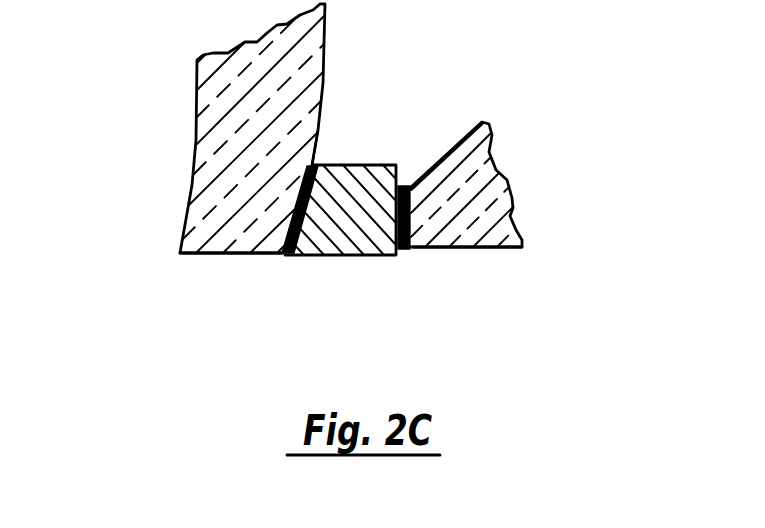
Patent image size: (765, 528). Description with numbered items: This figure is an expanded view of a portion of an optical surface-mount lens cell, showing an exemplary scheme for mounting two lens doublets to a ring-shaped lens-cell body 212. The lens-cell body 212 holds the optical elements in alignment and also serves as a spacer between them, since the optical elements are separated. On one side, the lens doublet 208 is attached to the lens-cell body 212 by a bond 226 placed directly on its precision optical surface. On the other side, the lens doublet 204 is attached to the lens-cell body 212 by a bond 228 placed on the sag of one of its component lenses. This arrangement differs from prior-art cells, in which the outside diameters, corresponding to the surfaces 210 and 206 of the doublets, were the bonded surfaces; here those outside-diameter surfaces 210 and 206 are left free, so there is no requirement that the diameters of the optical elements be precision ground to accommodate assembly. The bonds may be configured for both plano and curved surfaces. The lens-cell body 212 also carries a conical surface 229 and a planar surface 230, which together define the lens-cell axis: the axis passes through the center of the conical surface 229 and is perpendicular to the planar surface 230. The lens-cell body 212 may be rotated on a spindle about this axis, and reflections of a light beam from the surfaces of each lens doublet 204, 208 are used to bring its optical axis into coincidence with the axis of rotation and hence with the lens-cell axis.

The lens doublet 204 is at (513, 222).
The outside diameter surface 206 is at (495, 253).
The lens doublet 208 is at (220, 202).
The outside diameter surface 210 is at (203, 257).
The lens-cell body 212 is at (373, 165).
The bond 226 is at (275, 253).
The bond 228 is at (402, 250).
The conical surface 229 is at (312, 165).
The planar surface 230 is at (400, 172).